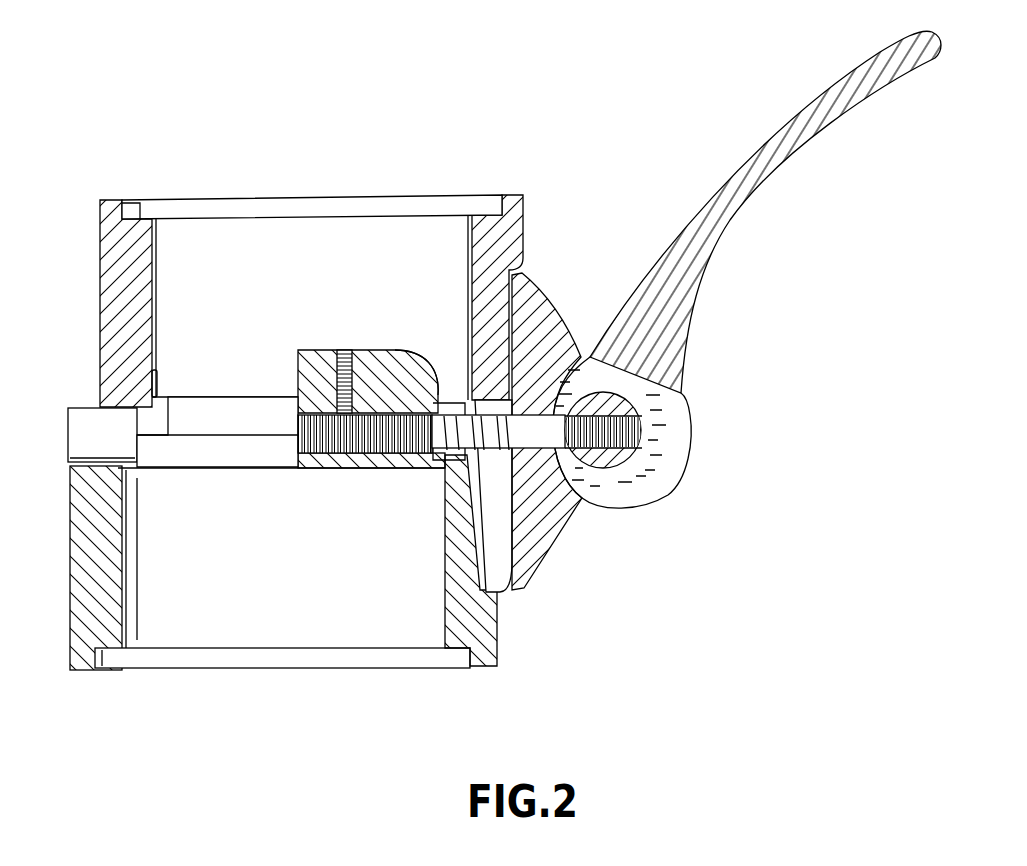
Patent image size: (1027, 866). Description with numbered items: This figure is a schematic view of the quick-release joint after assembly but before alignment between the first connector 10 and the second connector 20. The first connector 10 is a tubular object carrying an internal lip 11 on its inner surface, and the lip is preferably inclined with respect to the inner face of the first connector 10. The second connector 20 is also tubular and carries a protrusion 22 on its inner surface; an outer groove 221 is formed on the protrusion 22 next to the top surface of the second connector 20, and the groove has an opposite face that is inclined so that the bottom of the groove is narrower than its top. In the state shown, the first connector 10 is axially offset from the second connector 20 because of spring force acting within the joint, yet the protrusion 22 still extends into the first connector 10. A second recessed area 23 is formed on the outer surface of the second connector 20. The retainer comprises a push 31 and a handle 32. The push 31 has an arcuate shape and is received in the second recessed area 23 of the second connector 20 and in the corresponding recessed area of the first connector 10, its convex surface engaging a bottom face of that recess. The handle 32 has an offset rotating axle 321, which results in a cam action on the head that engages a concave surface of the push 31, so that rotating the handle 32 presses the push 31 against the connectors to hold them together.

The first connector 10 is at (112, 236).
The internal lip 11 is at (162, 368).
The second connector 20 is at (112, 588).
The protrusion 22 is at (372, 356).
The outer groove 221 is at (446, 392).
The second recessed area 23 is at (470, 607).
The push 31 is at (538, 313).
The handle 32 is at (710, 256).
The offset rotating axle 321 is at (627, 499).